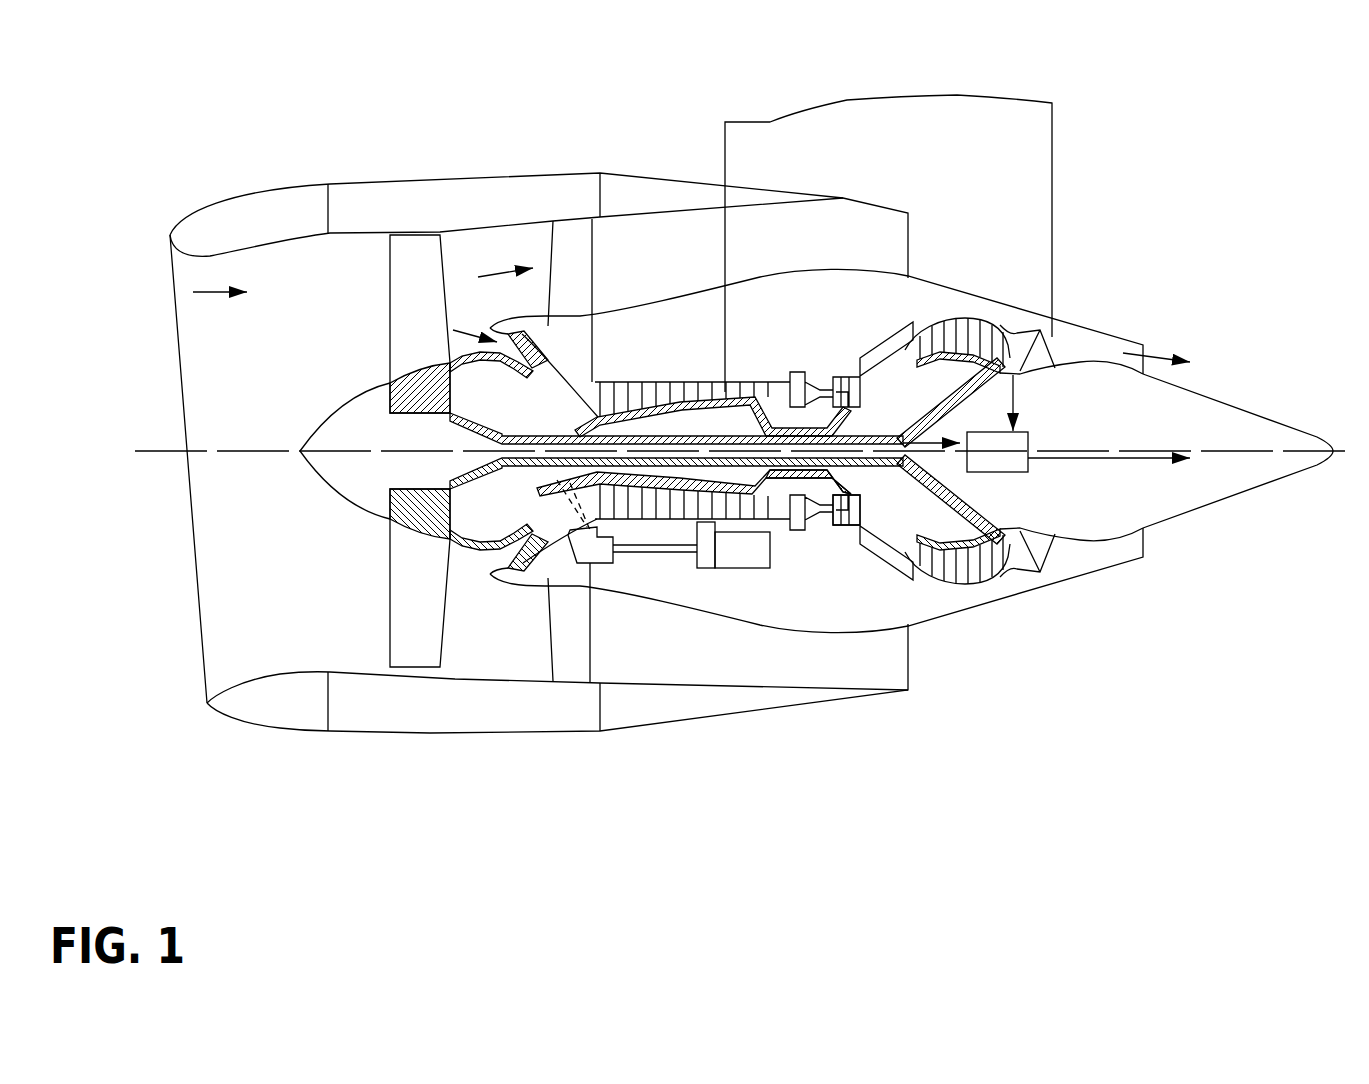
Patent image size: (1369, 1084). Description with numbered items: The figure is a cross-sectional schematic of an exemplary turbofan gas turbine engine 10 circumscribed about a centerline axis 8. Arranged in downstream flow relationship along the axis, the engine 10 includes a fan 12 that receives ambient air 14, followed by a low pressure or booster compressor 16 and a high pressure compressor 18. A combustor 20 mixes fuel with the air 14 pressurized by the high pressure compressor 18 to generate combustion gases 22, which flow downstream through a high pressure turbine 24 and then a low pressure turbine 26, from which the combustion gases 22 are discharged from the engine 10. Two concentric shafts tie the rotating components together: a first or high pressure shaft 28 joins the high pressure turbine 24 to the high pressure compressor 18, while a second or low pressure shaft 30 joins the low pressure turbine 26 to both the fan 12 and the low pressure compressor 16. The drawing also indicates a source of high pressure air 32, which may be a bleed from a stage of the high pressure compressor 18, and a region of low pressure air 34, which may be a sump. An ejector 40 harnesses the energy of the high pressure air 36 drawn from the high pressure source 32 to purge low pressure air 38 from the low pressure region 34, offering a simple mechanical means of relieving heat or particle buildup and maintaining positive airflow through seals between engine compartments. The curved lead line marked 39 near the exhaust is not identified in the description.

The centerline axis 8 is at (1053, 450).
The turbofan gas turbine engine 10 is at (973, 230).
The fan 12 is at (383, 378).
The ambient air 14 is at (213, 297).
The low pressure or booster compressor 16 is at (550, 371).
The high pressure compressor 18 is at (600, 383).
The combustor 20 is at (805, 370).
The combustion gases 22 is at (1155, 355).
The high pressure turbine 24 is at (843, 377).
The low pressure turbine 26 is at (973, 318).
The high pressure shaft 28 is at (826, 515).
The low pressure shaft 30 is at (822, 492).
The source of high pressure air 32 is at (735, 380).
The region of low pressure air 34 is at (935, 433).
The high pressure air 36 is at (957, 93).
The low pressure air 38 is at (943, 447).
The exhaust stream 39 is at (1157, 462).
The ejector 40 is at (1018, 473).